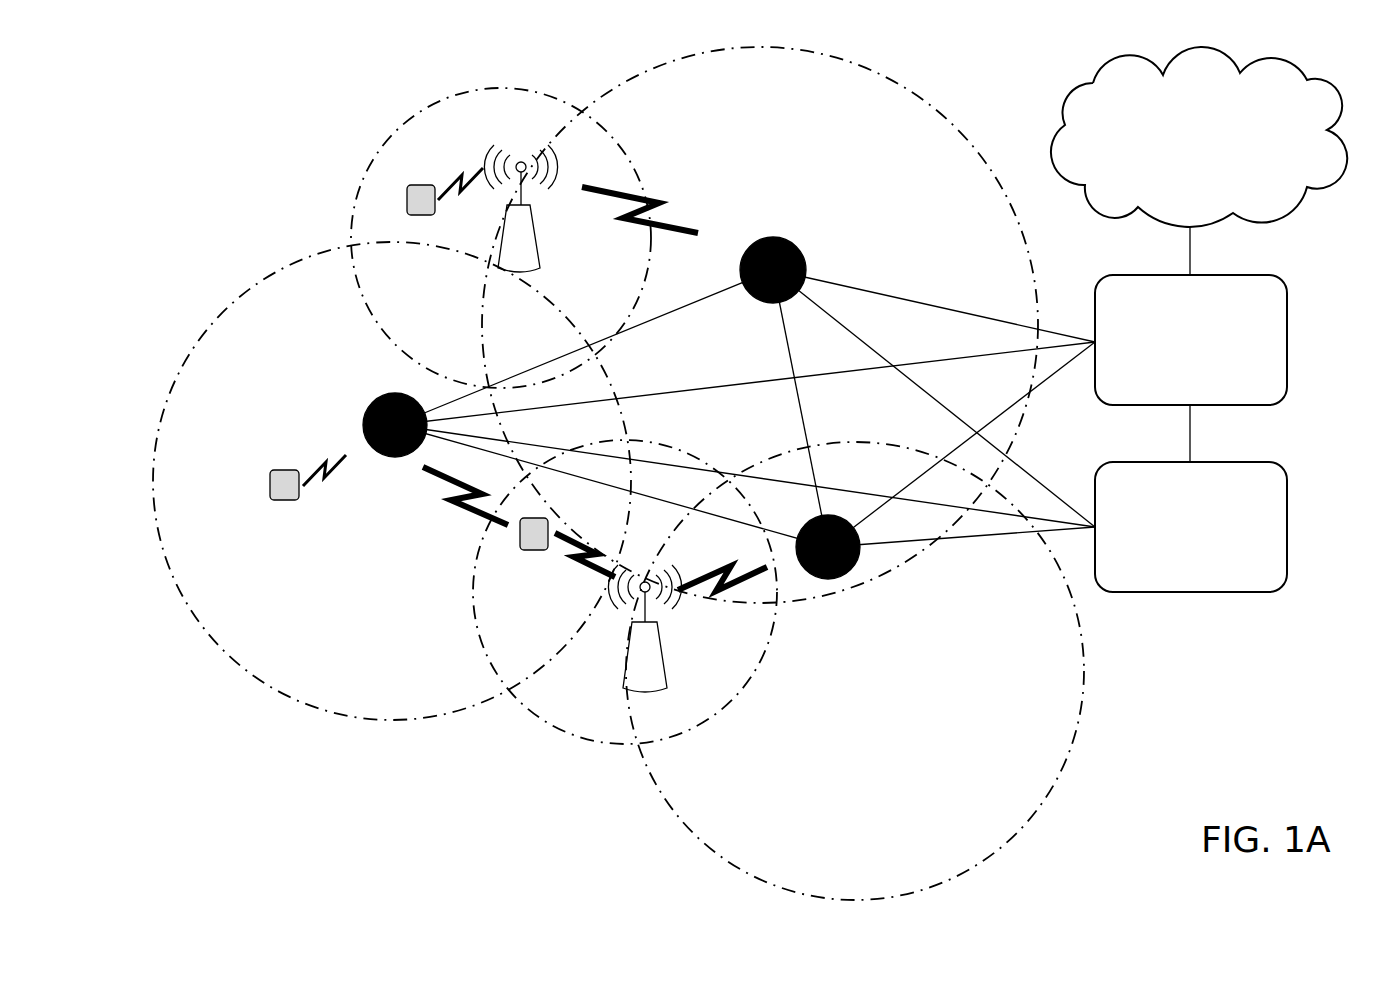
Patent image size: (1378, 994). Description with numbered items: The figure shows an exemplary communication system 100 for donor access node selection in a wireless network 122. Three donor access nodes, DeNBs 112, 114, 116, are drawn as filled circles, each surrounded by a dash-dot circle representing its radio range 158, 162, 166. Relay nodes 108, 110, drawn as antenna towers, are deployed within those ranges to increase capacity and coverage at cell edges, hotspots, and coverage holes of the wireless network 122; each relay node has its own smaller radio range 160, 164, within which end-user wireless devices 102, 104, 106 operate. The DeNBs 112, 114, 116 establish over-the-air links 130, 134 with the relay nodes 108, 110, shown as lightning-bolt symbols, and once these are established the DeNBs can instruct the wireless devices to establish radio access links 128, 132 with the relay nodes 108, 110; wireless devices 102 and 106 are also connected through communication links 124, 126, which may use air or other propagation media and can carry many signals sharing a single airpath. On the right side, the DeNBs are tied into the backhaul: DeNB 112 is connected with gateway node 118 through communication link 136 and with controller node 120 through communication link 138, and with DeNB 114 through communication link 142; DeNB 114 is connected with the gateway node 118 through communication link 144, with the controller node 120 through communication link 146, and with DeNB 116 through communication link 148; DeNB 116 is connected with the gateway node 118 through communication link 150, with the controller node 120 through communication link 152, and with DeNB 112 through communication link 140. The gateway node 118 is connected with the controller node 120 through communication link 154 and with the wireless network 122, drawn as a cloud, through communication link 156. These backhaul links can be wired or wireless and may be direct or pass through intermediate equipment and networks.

The communication system 100 is at (281, 752).
The wireless device 102 is at (284, 500).
The wireless device 104 is at (420, 215).
The wireless device 106 is at (534, 550).
The relay node 108 is at (636, 692).
The relay node 110 is at (508, 272).
The DeNB 112 is at (790, 240).
The DeNB 114 is at (392, 393).
The DeNB 116 is at (828, 579).
The gateway node 118 is at (1191, 340).
The controller node 120 is at (1191, 527).
The wireless network 122 is at (1199, 137).
The communication link 124 is at (320, 470).
The communication link 126 is at (468, 504).
The radio access link 128 is at (590, 552).
The over-the-air link 130 is at (700, 582).
The radio access link 132 is at (452, 185).
The over-the-air link 134 is at (662, 208).
The communication link 136 is at (850, 290).
The communication link 138 is at (860, 339).
The communication link 140 is at (791, 360).
The communication link 142 is at (697, 301).
The communication link 144 is at (698, 388).
The communication link 146 is at (525, 444).
The communication link 148 is at (645, 495).
The communication link 150 is at (893, 497).
The communication link 152 is at (910, 541).
The communication link 154 is at (1191, 452).
The communication link 156 is at (1191, 267).
The radio range 158 is at (918, 95).
The radio range 160 is at (500, 88).
The radio range 162 is at (228, 664).
The radio range 164 is at (568, 744).
The radio range 166 is at (798, 897).